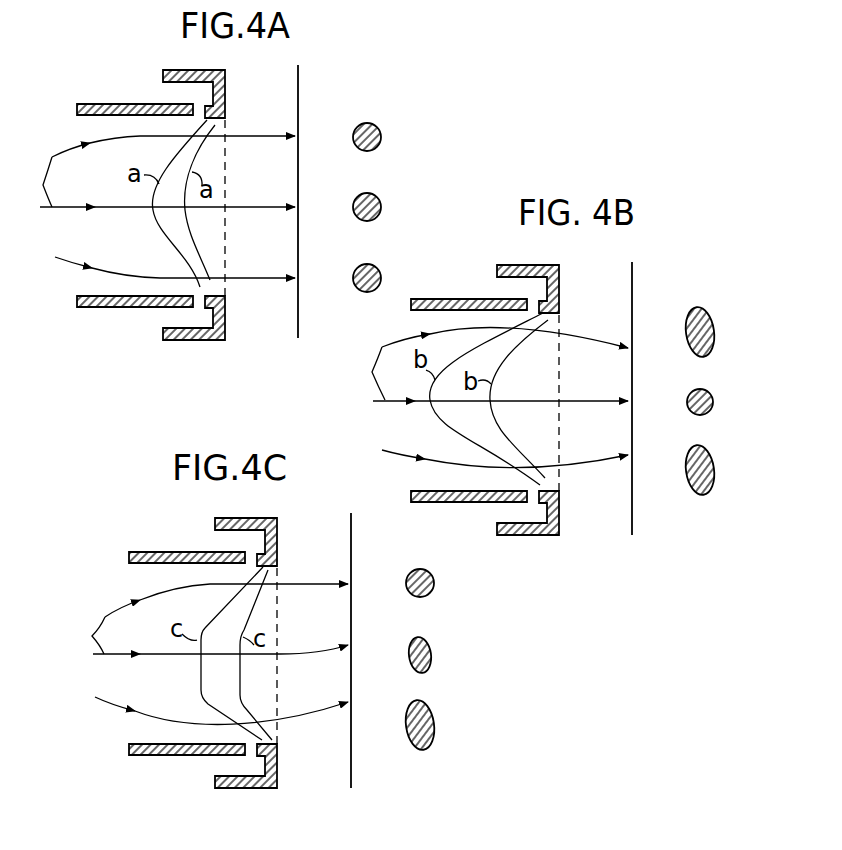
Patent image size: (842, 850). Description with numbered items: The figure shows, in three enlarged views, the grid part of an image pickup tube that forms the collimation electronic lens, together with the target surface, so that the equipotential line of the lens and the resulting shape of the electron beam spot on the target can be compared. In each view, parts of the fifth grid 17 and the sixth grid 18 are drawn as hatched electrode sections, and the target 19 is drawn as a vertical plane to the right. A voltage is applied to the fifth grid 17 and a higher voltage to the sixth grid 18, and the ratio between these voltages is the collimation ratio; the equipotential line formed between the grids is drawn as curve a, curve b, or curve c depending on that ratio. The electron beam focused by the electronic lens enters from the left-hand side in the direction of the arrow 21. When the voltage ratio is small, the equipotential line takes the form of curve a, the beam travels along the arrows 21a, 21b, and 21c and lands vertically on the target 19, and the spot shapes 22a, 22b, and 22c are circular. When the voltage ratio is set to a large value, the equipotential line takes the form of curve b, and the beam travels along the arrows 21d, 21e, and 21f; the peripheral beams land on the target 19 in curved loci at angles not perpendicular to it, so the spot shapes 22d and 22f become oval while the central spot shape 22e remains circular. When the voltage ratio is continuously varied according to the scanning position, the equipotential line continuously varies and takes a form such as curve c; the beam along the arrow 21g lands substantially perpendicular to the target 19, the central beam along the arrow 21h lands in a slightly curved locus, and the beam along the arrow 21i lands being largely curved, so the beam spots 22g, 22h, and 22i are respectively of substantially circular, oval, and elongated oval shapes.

In FIG. 4A, the fifth grid 17 is at (111, 104).
In FIG. 4B, the fifth grid 17 is at (449, 298).
In FIG. 4C, the fifth grid 17 is at (161, 551).
In FIG. 4A, the sixth grid 18 is at (203, 70).
In FIG. 4B, the sixth grid 18 is at (525, 264).
In FIG. 4C, the sixth grid 18 is at (240, 517).
In FIG. 4A, the target 19 is at (300, 90).
In FIG. 4B, the target 19 is at (634, 289).
In FIG. 4C, the target 19 is at (353, 542).
In FIG. 4A, the electron beam 21 is at (36, 182).
In FIG. 4B, the electron beam 21 is at (364, 373).
In FIG. 4C, the electron beam 21 is at (85, 635).
In FIG. 4A, the electron beam path 21a is at (260, 134).
In FIG. 4A, the electron beam path 21b is at (260, 206).
In FIG. 4A, the electron beam path 21c is at (260, 277).
In FIG. 4B, the electron beam path 21d is at (593, 340).
In FIG. 4B, the electron beam path 21e is at (590, 399).
In FIG. 4B, the electron beam path 21f is at (593, 462).
In FIG. 4C, the electron beam path 21g is at (307, 583).
In FIG. 4C, the electron beam path 21h is at (307, 653).
In FIG. 4C, the electron beam path 21i is at (312, 716).
In FIG. 4A, the spot shape 22a is at (376, 124).
In FIG. 4A, the spot shape 22b is at (376, 194).
In FIG. 4A, the spot shape 22c is at (376, 265).
In FIG. 4B, the spot shape 22d is at (702, 302).
In FIG. 4B, the spot shape 22e is at (688, 393).
In FIG. 4B, the spot shape 22f is at (690, 452).
In FIG. 4C, the beam spot 22g is at (418, 568).
In FIG. 4C, the beam spot 22h is at (410, 643).
In FIG. 4C, the beam spot 22i is at (410, 708).